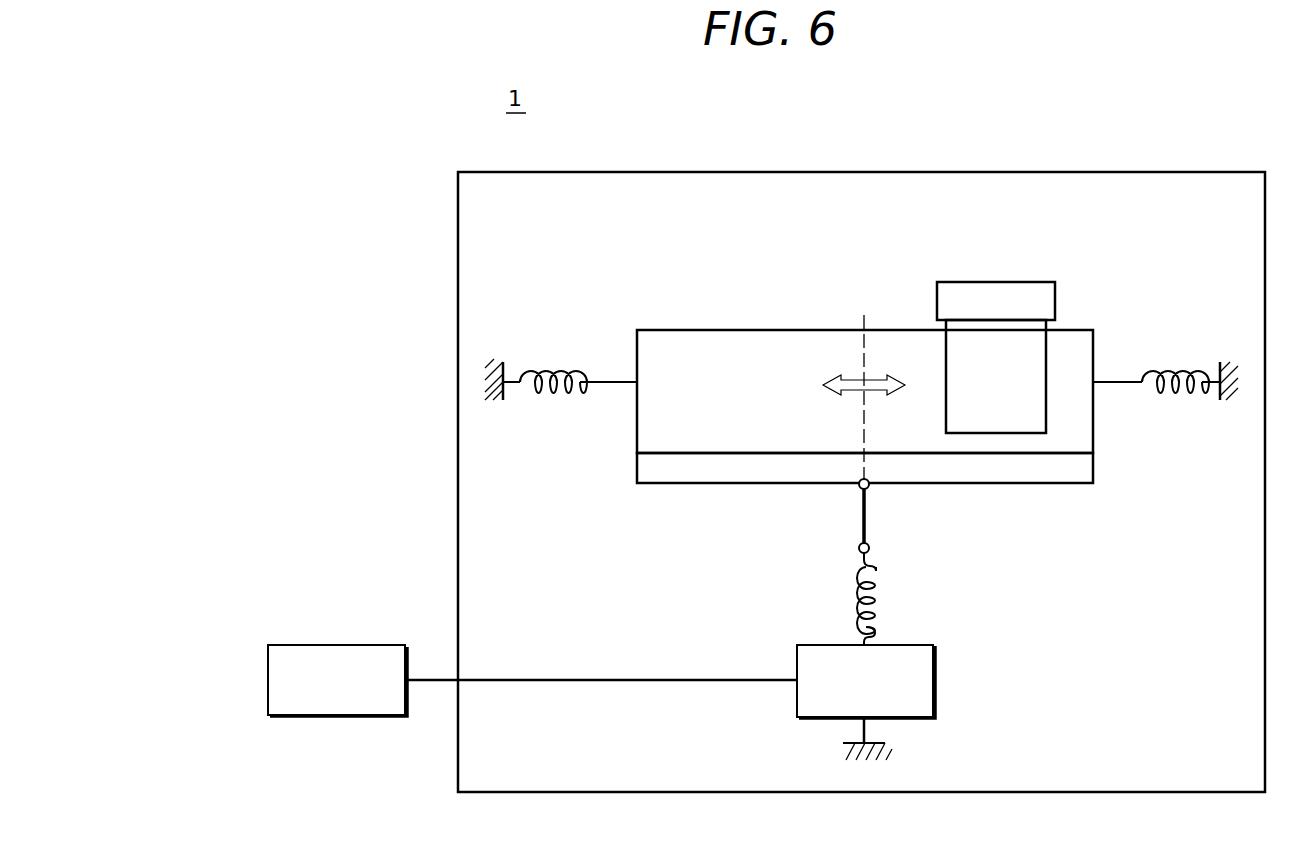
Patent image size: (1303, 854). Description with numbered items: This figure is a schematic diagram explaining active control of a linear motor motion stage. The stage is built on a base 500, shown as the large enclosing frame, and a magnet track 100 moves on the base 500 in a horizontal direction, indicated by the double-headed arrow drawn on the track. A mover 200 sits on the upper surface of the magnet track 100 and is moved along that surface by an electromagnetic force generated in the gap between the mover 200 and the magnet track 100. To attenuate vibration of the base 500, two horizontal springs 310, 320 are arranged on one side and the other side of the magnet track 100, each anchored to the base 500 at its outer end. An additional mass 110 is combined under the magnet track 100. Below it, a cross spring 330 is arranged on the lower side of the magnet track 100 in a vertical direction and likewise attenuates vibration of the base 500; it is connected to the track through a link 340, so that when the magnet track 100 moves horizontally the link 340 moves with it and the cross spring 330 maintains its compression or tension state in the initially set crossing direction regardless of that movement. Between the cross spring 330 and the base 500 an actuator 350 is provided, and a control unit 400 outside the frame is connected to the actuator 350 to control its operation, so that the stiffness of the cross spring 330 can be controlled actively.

The magnet track 100 is at (747, 340).
The additional mass 110 is at (720, 470).
The mover 200 is at (1004, 264).
The horizontal spring 310 is at (549, 366).
The horizontal spring 320 is at (1170, 366).
The cross spring 330 is at (878, 590).
The link 340 is at (868, 517).
The actuator 350 is at (934, 668).
The control unit 400 is at (355, 645).
The base 500 is at (866, 172).